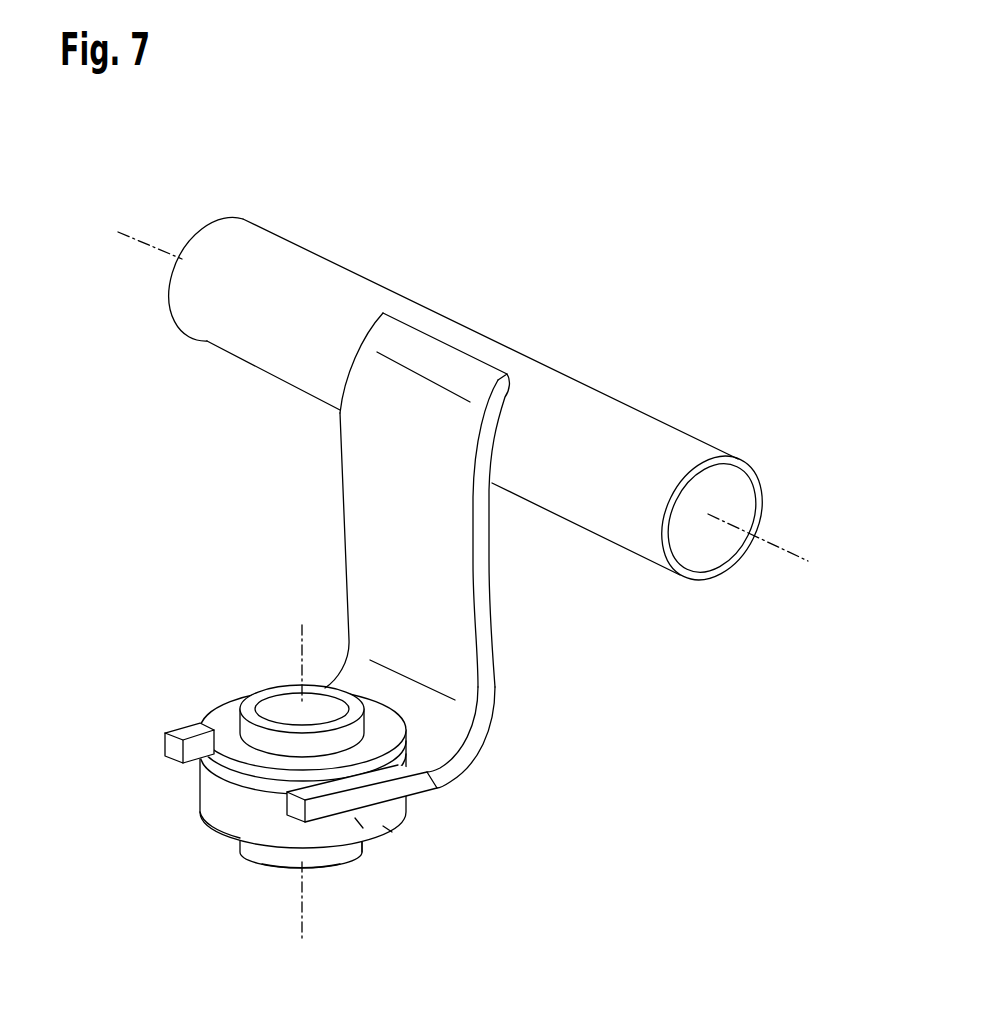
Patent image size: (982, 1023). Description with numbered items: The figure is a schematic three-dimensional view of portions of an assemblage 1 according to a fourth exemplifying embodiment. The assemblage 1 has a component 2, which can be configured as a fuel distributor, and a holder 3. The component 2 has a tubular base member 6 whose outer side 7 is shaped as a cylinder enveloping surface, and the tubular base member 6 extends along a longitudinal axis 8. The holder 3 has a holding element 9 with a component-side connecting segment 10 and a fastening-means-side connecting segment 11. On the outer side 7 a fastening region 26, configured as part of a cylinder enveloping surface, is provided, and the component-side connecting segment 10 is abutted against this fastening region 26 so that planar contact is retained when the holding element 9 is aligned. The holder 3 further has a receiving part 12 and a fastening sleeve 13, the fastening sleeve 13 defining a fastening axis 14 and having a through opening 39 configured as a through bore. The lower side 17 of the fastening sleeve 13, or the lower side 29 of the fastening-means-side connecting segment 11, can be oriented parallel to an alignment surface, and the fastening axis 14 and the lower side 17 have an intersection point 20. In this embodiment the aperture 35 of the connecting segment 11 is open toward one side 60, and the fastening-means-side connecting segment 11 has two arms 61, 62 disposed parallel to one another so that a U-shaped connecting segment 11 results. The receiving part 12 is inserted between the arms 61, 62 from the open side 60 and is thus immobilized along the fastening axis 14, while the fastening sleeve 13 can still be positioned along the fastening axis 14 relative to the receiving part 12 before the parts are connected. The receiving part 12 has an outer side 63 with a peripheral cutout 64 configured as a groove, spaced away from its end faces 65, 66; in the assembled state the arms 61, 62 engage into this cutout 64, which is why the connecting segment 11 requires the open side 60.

The assemblage 1 is at (756, 325).
The component 2 is at (682, 450).
The holder 3 is at (402, 877).
The tubular base member 6 is at (712, 518).
The outer side 7 is at (305, 248).
The longitudinal axis 8 is at (773, 550).
The holding element 9 is at (453, 600).
The component-side connecting segment 10 is at (410, 357).
The fastening-means-side connecting segment 11 is at (410, 767).
The receiving part 12 is at (212, 800).
The fastening sleeve 13 is at (267, 847).
The fastening axis 14 is at (298, 936).
The lower side 17 is at (320, 860).
The intersection point 20 is at (300, 868).
The fastening region 26 is at (500, 357).
The lower side 29 is at (430, 788).
The aperture 35 is at (202, 768).
The through opening 39 is at (280, 702).
The open side 60 is at (163, 758).
The arm 61 is at (200, 730).
The arm 62 is at (380, 797).
The outer side 63 is at (360, 820).
The cutout 64 is at (215, 832).
The end face 65 is at (220, 712).
The end face 66 is at (383, 826).